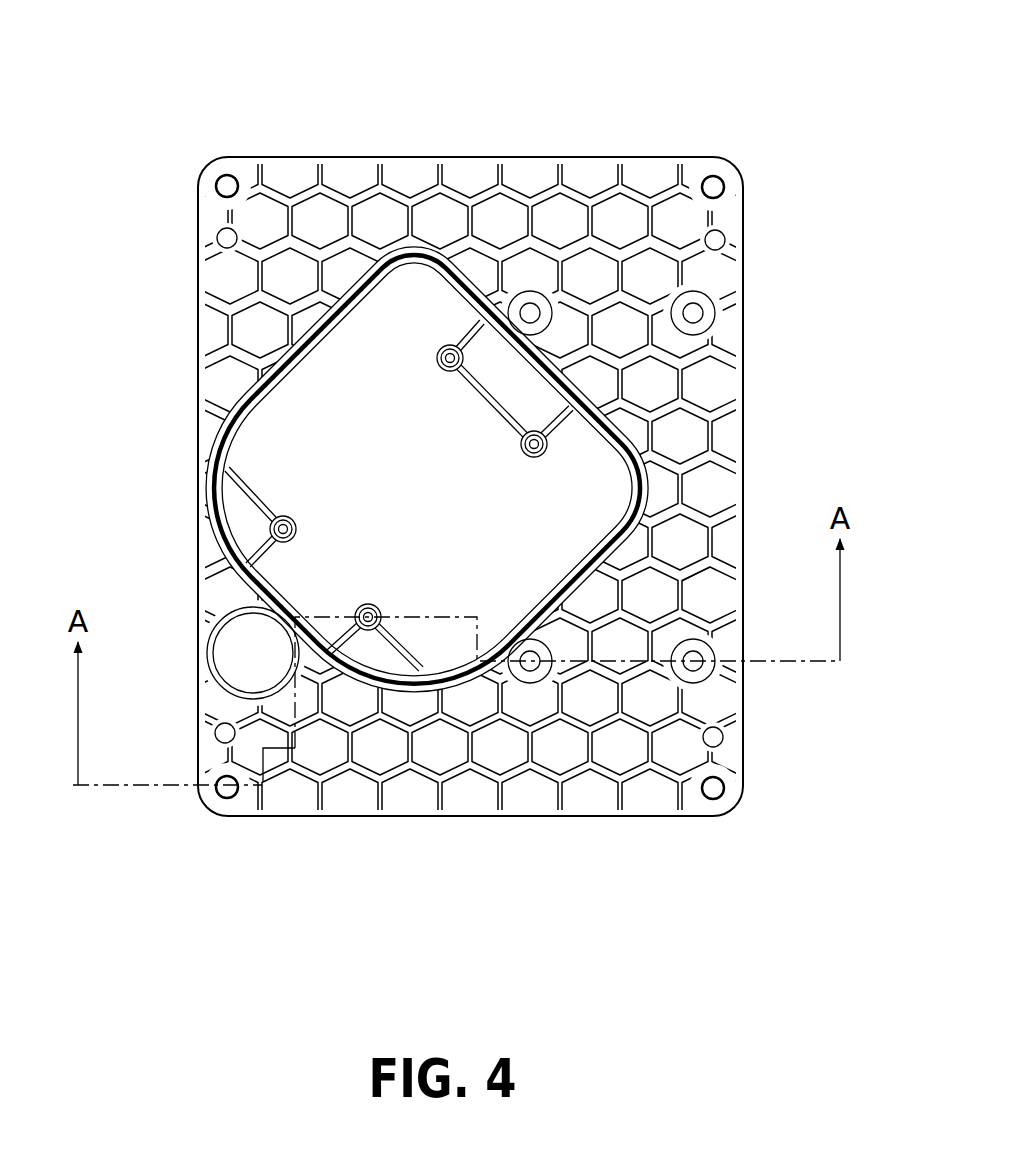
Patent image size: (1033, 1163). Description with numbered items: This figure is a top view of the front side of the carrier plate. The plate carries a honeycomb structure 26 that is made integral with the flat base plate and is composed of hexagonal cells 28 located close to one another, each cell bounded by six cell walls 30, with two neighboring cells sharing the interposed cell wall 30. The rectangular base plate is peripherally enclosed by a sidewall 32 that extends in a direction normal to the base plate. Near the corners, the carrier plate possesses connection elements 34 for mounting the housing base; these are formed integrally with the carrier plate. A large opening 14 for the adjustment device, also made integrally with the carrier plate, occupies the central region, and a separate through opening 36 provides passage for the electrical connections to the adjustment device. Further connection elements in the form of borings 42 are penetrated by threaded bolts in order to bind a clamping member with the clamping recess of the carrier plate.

The opening 14 is at (486, 410).
The honeycomb structure 26 is at (750, 379).
The hexagonal cells 28 is at (686, 434).
The cell walls 30 is at (699, 574).
The sidewall 32 is at (640, 155).
The connection elements 34 is at (220, 178).
The through opening 36 is at (223, 653).
The borings 42 is at (528, 306).